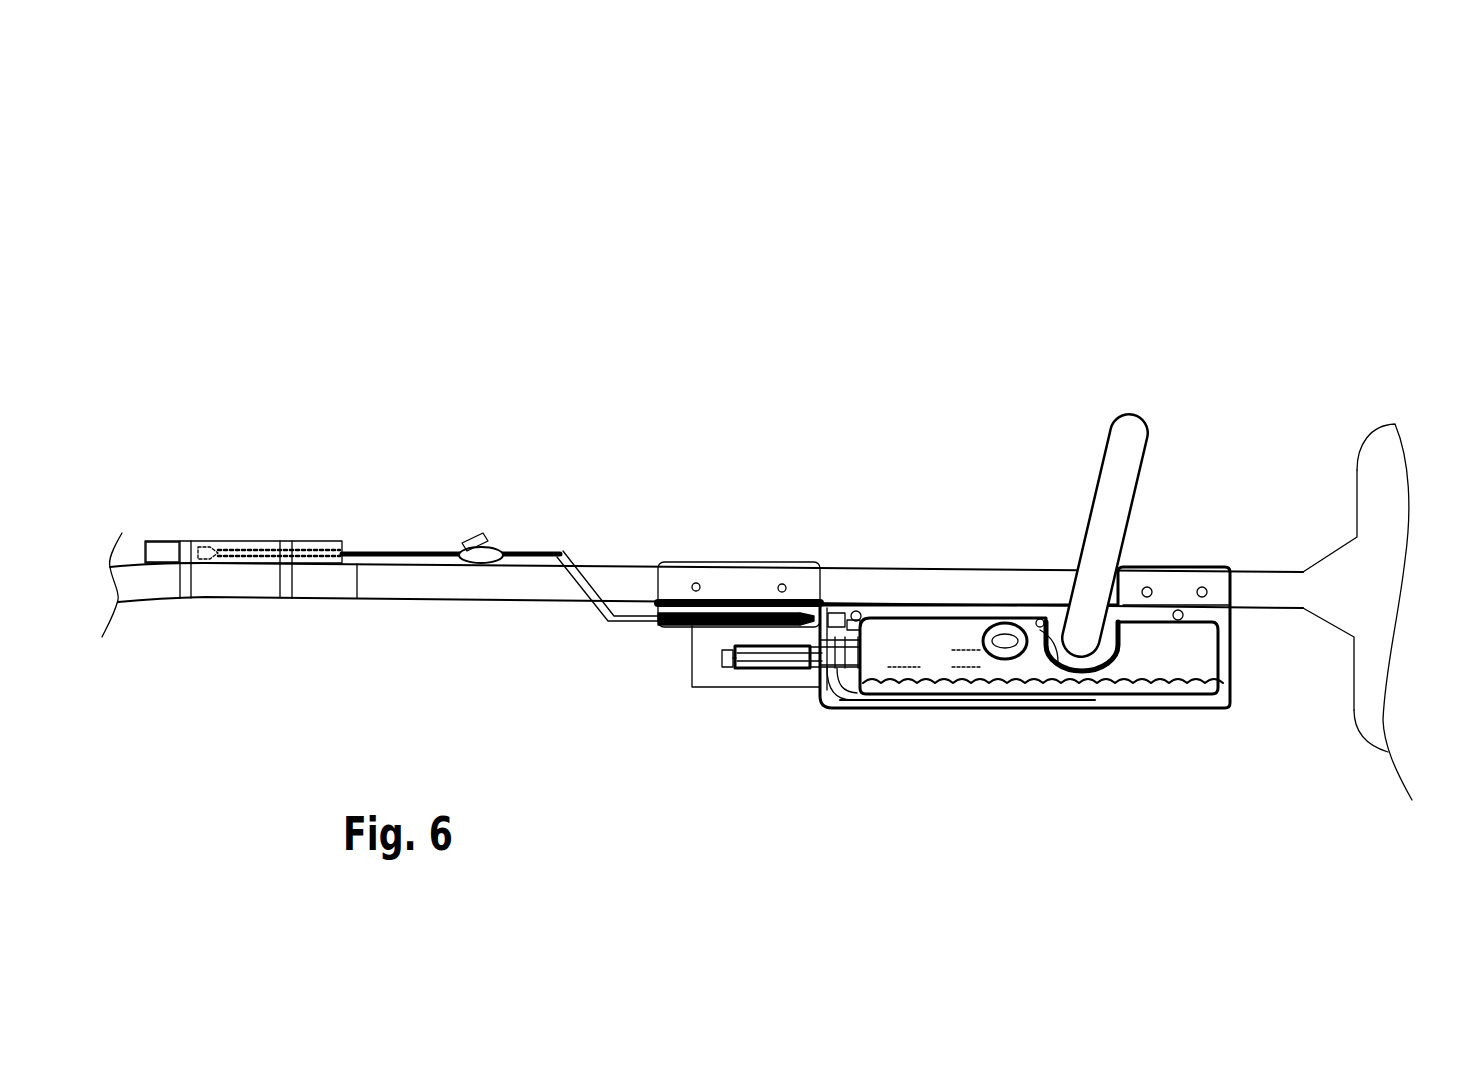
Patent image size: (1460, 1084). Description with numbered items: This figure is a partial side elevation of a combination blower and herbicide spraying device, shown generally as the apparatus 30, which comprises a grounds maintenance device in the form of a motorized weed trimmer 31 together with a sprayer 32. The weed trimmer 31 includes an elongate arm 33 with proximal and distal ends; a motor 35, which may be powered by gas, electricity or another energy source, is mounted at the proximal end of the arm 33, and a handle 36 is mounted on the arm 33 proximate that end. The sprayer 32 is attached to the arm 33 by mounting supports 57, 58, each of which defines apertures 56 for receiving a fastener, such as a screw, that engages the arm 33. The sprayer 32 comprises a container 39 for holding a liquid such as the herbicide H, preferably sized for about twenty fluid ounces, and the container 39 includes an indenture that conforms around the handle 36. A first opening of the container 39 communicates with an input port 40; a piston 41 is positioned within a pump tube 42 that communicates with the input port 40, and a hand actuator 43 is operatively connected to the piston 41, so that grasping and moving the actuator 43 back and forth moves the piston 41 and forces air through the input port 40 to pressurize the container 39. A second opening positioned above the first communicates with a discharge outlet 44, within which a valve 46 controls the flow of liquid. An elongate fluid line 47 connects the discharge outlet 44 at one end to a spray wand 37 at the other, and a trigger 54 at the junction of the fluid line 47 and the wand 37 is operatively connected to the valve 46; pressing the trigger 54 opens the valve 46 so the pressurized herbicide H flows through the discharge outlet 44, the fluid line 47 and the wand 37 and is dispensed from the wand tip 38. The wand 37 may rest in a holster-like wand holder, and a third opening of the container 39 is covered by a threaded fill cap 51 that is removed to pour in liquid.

The apparatus 30 is at (318, 218).
The motorized weed trimmer 31 is at (1257, 555).
The sprayer 32 is at (877, 722).
The arm 33 is at (848, 585).
The motor 35 is at (1382, 460).
The handle 36 is at (1118, 452).
The spray wand 37 is at (303, 543).
The wand tip 38 is at (212, 550).
The container 39 is at (160, 552).
The input port 40 is at (830, 675).
The piston 41 is at (720, 663).
The pump tube 42 is at (790, 670).
The hand actuator 43 is at (703, 638).
The discharge outlet 44 is at (830, 608).
The valve 46 is at (810, 668).
The fluid line 47 is at (630, 617).
The fill cap 51 is at (1010, 657).
The trigger 54 is at (474, 543).
The apertures 56 is at (696, 583).
The mounting support 57 is at (724, 565).
The mounting support 58 is at (1163, 567).
The liquid herbicide H is at (1160, 686).